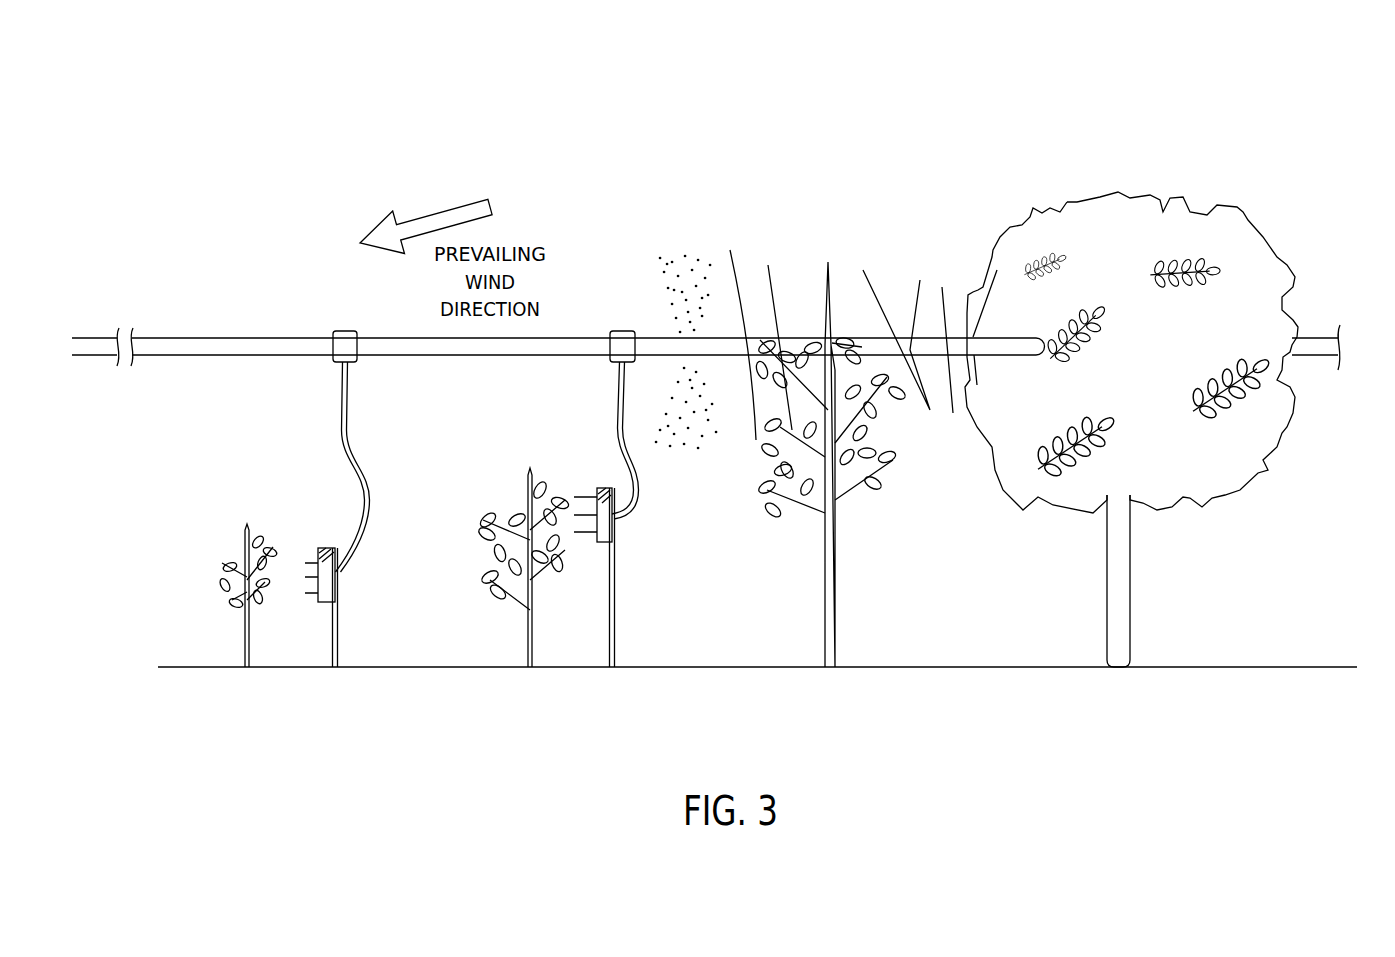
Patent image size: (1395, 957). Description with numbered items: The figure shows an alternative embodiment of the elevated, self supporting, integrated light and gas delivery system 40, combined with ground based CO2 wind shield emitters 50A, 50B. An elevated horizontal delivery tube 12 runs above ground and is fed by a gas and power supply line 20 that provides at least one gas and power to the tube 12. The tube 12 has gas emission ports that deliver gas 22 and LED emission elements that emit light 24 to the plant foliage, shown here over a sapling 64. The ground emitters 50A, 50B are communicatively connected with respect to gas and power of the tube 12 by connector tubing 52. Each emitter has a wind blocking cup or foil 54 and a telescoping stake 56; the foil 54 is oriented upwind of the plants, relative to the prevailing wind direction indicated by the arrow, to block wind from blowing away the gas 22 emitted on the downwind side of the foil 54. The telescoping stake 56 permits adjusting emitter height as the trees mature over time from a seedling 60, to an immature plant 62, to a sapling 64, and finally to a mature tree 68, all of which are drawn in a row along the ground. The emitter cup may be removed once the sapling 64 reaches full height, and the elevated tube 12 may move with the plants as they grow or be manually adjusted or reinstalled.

The gas and power supply line 20 is at (101, 312).
The delivery tube 12 is at (394, 360).
The gas 22 is at (682, 252).
The light 24 is at (804, 260).
The elevated, self supporting, integrated light and gas delivery system 40 is at (1007, 128).
The ground based CO2 wind shield emitter 50A is at (355, 583).
The ground based CO2 wind shield emitter 50B is at (626, 533).
The connector tubing 52 is at (340, 453).
The wind blocking cup or foil 54 is at (320, 547).
The telescoping stake 56 is at (338, 653).
The seedling 60 is at (243, 613).
The immature plant 62 is at (527, 612).
The sapling 64 is at (827, 582).
The mature tree 68 is at (1107, 575).